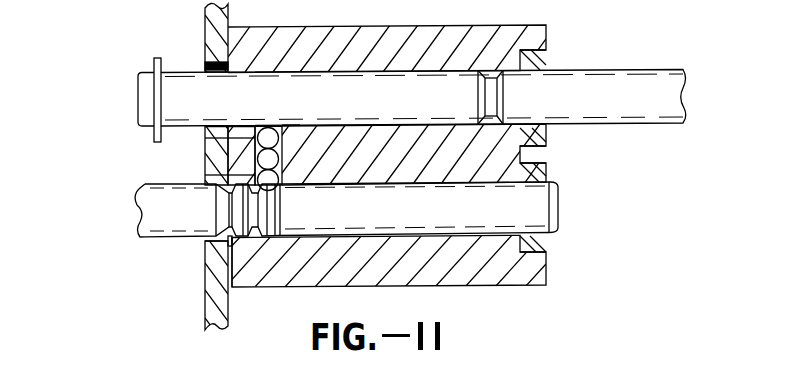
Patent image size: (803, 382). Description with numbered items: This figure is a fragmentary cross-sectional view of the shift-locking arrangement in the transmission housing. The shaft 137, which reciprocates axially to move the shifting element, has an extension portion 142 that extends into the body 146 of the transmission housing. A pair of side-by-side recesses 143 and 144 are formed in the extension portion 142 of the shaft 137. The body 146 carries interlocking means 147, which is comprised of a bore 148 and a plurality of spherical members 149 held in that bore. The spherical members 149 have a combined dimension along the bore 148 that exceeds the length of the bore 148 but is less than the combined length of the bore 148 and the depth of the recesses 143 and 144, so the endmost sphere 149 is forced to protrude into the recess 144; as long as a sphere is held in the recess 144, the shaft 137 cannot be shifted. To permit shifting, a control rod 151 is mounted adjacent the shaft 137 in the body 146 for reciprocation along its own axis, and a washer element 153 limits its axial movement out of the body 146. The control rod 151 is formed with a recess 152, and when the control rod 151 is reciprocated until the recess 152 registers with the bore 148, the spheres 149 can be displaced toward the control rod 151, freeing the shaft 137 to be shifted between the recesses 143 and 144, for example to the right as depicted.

The shaft 137 is at (168, 184).
The extension portion 142 is at (322, 181).
The recess 143 is at (230, 248).
The recess 144 is at (268, 237).
The body 146 is at (548, 152).
The interlocking means 147 is at (293, 121).
The bore 148 is at (268, 128).
The spherical members 149 is at (257, 172).
The control rod 151 is at (412, 71).
The recess 152 is at (490, 78).
The washer element 153 is at (172, 63).